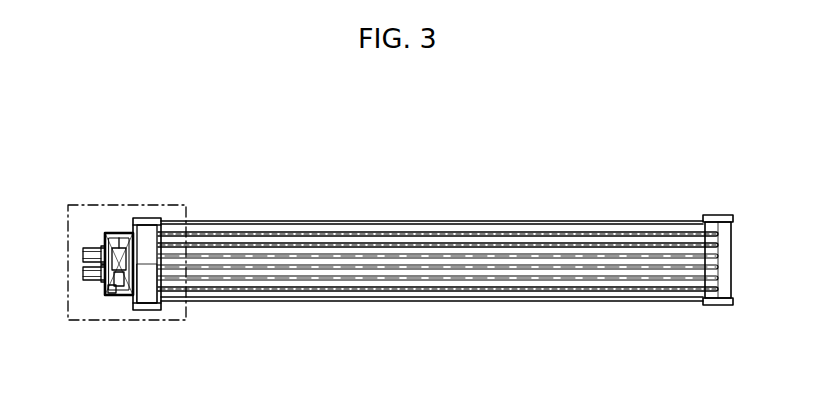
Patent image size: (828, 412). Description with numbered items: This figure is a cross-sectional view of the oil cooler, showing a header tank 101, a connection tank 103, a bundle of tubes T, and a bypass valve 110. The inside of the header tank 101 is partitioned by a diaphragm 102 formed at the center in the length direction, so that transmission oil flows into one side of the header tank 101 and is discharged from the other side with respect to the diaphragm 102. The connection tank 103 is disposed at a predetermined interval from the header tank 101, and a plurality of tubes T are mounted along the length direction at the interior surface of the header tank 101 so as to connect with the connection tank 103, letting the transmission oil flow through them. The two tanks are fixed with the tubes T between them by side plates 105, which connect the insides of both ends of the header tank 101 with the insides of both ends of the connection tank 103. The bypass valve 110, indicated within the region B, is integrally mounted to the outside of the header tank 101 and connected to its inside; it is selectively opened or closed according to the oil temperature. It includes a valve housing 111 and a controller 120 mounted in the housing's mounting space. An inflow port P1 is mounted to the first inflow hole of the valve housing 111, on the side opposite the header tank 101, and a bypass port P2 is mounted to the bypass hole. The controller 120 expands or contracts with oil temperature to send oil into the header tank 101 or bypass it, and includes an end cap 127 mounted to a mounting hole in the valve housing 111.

The header tank 101 is at (134, 224).
The diaphragm 102 is at (141, 302).
The connection tank 103 is at (733, 240).
The side plates 105 is at (387, 221).
The bypass valve 110 is at (84, 263).
The valve housing 111 is at (107, 235).
The controller 120 is at (122, 310).
The end cap 127 is at (108, 297).
The tubes T is at (273, 268).
The bypass region B is at (186, 206).
The inflow port P1 is at (88, 248).
The bypass port P2 is at (88, 280).